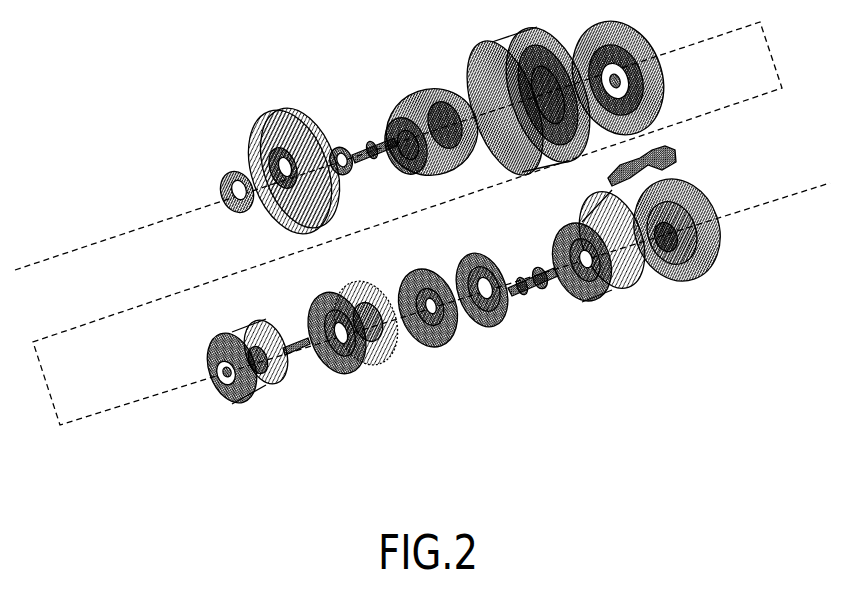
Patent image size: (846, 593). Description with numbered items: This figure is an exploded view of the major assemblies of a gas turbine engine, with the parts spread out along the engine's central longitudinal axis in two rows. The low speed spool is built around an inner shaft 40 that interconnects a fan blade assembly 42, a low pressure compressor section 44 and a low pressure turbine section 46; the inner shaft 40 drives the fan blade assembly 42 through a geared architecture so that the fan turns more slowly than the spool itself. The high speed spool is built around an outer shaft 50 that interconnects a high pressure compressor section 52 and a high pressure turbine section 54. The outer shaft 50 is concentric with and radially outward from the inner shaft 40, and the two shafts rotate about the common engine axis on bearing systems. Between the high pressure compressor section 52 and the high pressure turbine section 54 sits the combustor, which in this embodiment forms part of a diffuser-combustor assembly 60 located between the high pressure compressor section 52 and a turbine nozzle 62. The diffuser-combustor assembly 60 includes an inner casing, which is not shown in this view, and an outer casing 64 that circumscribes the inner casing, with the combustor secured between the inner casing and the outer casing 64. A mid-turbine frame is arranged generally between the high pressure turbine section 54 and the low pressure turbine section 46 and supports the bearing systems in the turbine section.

The inner shaft 40 is at (354, 168).
The fan blade assembly 42 is at (292, 105).
The low pressure compressor section 44 is at (407, 92).
The low pressure turbine section 46 is at (607, 303).
The outer shaft 50 is at (353, 353).
The high pressure compressor section 52 is at (252, 403).
The high pressure turbine section 54 is at (488, 332).
The diffuser-combustor assembly 60 is at (343, 383).
The turbine nozzle 62 is at (430, 349).
The outer casing 64 is at (374, 371).